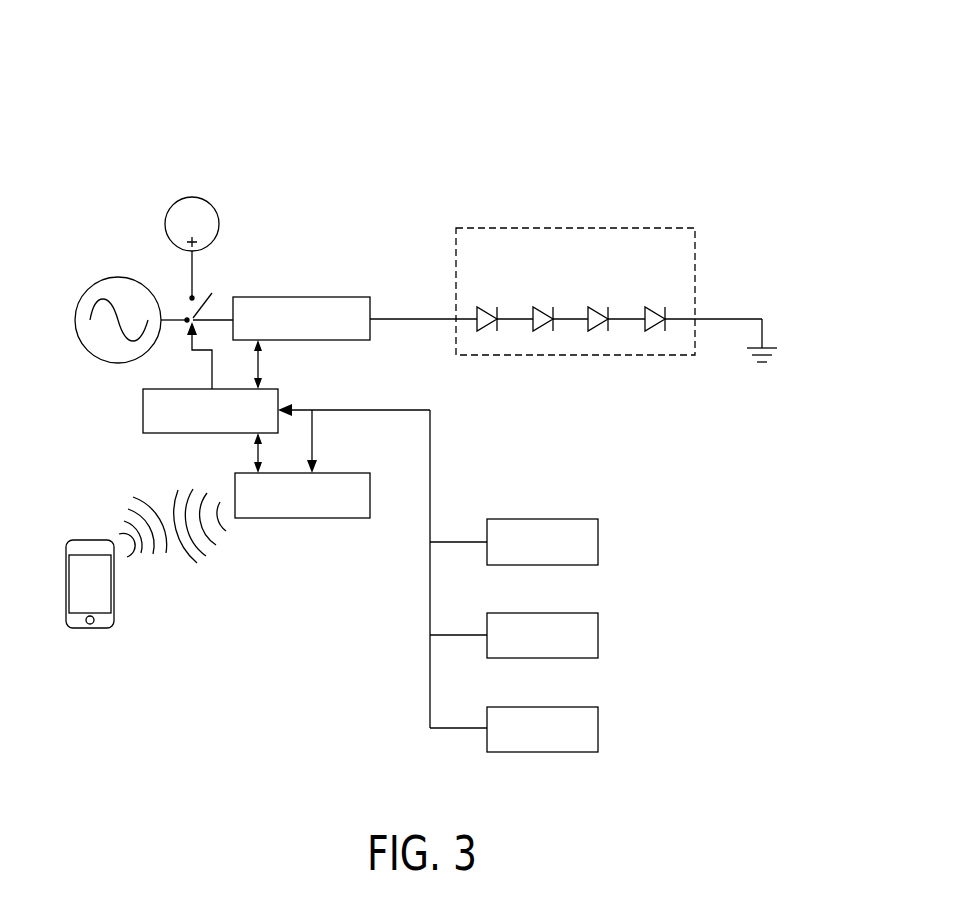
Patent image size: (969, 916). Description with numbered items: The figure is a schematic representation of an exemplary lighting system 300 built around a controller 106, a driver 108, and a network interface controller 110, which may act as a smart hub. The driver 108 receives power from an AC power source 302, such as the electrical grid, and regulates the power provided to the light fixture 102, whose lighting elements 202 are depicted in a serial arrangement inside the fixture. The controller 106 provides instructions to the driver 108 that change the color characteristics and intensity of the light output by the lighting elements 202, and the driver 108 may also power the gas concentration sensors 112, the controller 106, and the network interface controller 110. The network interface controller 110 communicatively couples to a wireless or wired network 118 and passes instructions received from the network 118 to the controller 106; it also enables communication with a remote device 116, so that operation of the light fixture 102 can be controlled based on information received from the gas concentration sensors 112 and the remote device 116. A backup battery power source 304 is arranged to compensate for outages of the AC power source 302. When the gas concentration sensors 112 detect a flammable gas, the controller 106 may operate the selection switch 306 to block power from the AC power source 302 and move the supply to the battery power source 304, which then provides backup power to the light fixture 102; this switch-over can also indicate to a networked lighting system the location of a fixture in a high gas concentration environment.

The lighting system 300 is at (565, 92).
The AC power source 302 is at (118, 277).
The battery power source 304 is at (192, 197).
The switch 306 is at (212, 293).
The driver 108 is at (307, 297).
The controller 106 is at (143, 411).
The network interface controller 110 is at (298, 518).
The light fixture 102 is at (573, 295).
The lighting elements 202 is at (483, 307).
The gas concentration sensors 112 is at (598, 540).
The remote device 116 is at (72, 540).
The network 118 is at (185, 570).